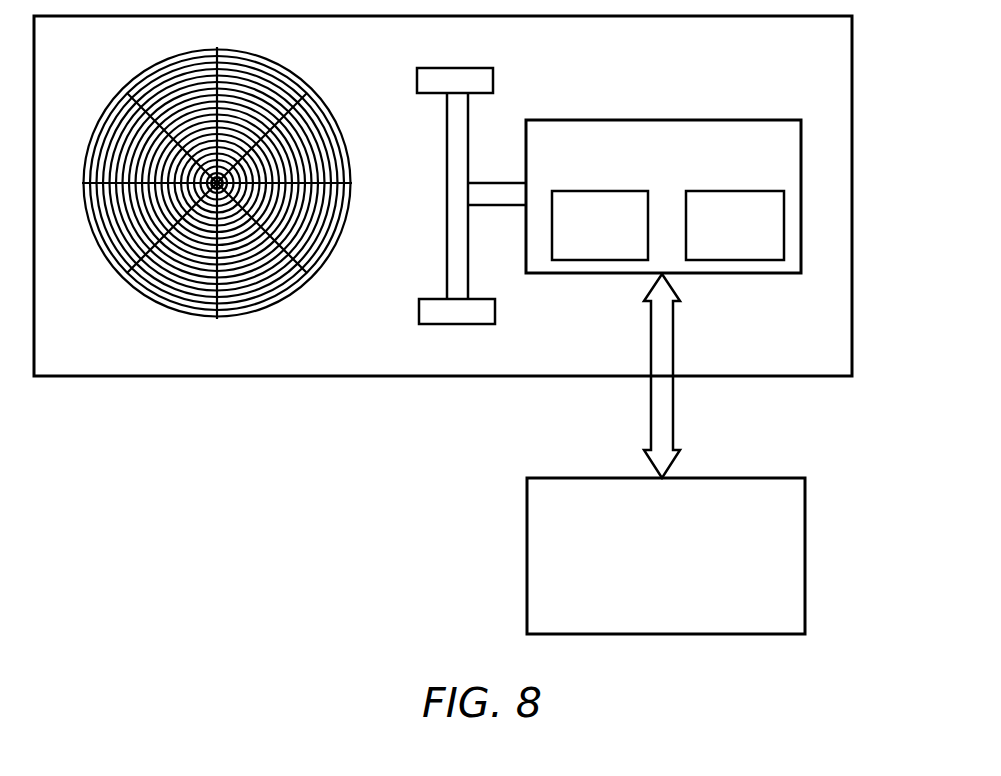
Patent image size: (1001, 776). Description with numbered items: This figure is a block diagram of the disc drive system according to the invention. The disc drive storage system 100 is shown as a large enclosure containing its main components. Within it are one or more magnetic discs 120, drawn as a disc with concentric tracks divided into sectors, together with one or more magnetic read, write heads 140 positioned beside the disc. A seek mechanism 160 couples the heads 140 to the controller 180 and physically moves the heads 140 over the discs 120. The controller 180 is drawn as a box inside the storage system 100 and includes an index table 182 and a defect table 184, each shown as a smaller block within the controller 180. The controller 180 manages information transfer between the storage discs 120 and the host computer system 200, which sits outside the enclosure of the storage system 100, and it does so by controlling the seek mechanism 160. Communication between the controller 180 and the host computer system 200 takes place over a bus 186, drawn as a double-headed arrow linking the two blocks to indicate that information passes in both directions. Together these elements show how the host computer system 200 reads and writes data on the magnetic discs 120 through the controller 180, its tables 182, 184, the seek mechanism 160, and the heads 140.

The disc drive storage system 100 is at (443, 222).
The magnetic disc 120 is at (221, 178).
The magnetic read, write head 140 is at (476, 197).
The seek mechanism 160 is at (513, 146).
The controller 180 is at (677, 198).
The index table 182 is at (597, 256).
The defect table 184 is at (757, 257).
The bus 186 is at (700, 376).
The host computer system 200 is at (627, 556).